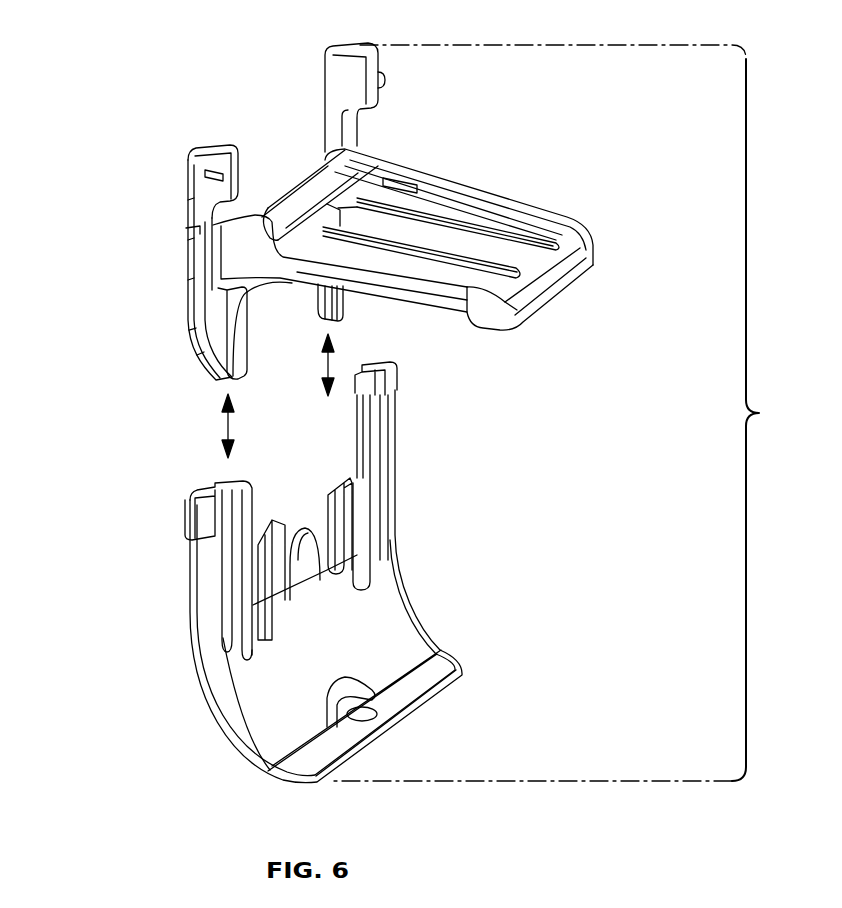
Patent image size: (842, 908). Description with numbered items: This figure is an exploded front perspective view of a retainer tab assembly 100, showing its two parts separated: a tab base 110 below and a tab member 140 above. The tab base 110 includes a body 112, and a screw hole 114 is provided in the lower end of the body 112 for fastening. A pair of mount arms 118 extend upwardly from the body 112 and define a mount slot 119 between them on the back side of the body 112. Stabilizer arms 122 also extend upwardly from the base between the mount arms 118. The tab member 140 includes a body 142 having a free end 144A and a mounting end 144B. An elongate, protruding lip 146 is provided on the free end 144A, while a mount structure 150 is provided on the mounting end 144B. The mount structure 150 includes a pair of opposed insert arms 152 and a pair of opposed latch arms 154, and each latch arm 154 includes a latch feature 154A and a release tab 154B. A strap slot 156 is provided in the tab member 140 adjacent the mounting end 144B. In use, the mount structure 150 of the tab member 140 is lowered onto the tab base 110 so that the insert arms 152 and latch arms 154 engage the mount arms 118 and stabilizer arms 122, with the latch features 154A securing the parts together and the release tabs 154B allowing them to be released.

The tab assembly 100 is at (168, 95).
The tab base 110 is at (140, 508).
The body 112 is at (258, 712).
The screw hole 114 is at (368, 712).
The mount arms 118 is at (210, 608).
The mount slot 119 is at (345, 446).
The stabilizer arms 122 is at (282, 540).
The tab member 140 is at (120, 254).
The body 142 is at (488, 200).
The free end 144A is at (565, 290).
The mounting end 144B is at (372, 148).
The protruding lip 146 is at (498, 322).
The mount structure 150 is at (178, 384).
The insert arms 152 is at (210, 352).
The latch arms 154 is at (190, 262).
The latch feature 154A is at (186, 230).
The release tab 154B is at (194, 156).
The strap slot 156 is at (343, 222).